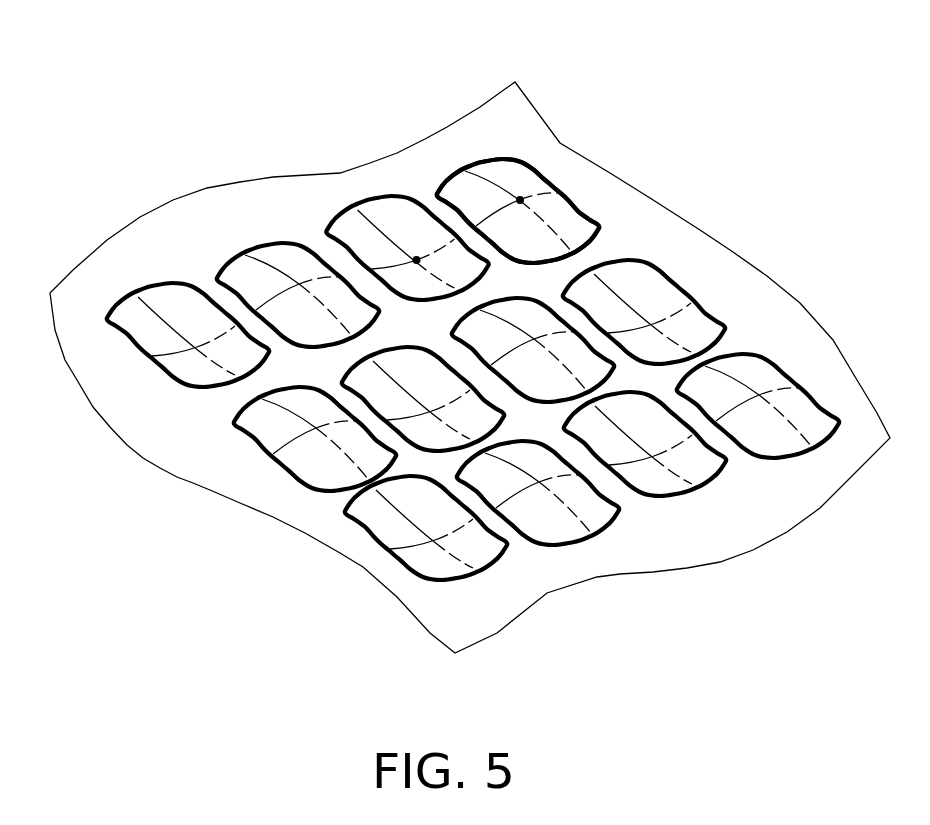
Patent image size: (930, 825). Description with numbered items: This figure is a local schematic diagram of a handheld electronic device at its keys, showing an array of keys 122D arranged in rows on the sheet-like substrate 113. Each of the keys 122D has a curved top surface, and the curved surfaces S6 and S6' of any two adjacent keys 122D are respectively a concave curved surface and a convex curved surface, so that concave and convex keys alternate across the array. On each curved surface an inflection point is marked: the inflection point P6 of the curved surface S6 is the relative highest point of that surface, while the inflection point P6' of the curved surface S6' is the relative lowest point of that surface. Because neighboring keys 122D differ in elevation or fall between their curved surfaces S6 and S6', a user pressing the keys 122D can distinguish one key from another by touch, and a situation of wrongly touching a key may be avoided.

The substrate 113 is at (716, 264).
The key 122D is at (572, 197).
The inflection point P6 is at (375, 178).
The curved surface S6 is at (407, 176).
The inflection point P6' is at (552, 128).
The curved surface S6' is at (518, 138).